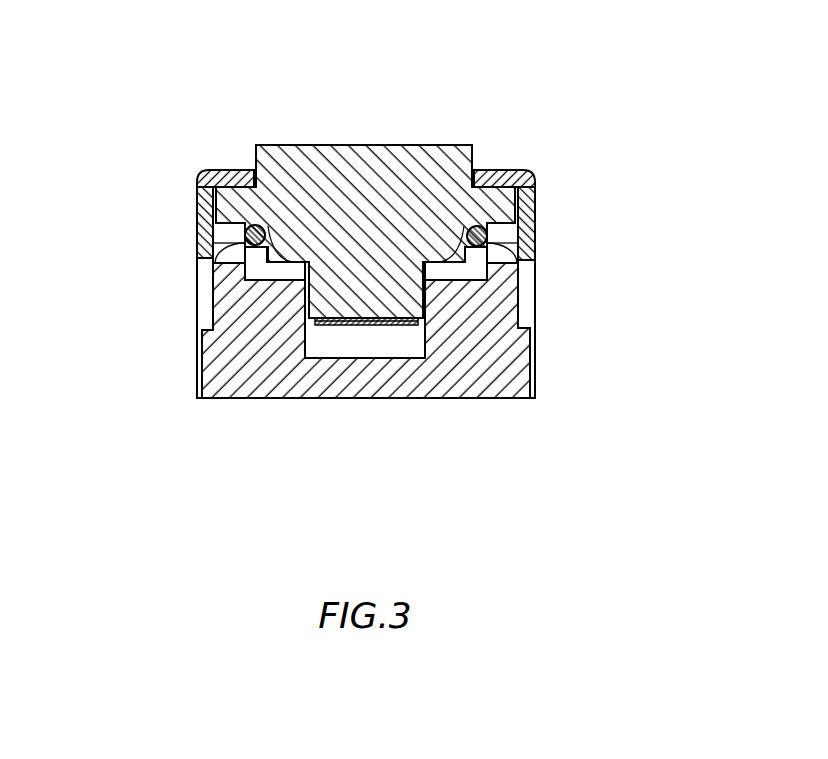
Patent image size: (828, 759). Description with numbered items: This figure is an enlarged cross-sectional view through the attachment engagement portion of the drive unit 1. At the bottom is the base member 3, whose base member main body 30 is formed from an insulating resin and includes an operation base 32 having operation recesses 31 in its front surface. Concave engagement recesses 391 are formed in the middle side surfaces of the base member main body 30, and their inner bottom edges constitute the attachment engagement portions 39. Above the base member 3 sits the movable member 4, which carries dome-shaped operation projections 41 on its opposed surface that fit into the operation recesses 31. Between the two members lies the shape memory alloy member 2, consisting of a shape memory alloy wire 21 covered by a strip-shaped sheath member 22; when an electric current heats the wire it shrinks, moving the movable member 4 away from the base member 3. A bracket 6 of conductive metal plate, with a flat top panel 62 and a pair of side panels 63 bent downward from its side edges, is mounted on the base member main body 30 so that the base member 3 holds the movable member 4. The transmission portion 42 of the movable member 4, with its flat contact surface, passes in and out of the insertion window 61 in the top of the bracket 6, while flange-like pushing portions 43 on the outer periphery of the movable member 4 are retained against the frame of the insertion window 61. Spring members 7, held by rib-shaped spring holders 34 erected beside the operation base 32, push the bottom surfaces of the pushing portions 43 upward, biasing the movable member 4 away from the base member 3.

The drive unit 1 is at (345, 143).
The shape memory alloy member 2 is at (378, 409).
The base member 3 is at (357, 383).
The movable member 4 is at (366, 246).
The bracket 6 is at (372, 163).
The spring member 7 is at (245, 233).
The shape memory alloy wire 21 is at (365, 325).
The sheath member 22 is at (400, 325).
The base member main body 30 is at (288, 400).
The operation recess 31 is at (343, 358).
The operation base 32 is at (310, 347).
The spring holder 34 is at (250, 290).
The attachment engagement portion 39 is at (194, 322).
The operation projection 41 is at (411, 320).
The transmission portion 42 is at (398, 145).
The pushing portion 43 is at (236, 158).
The insertion window 61 is at (473, 145).
The top panel 62 is at (500, 170).
The side panel 63 is at (198, 203).
The engagement recess 391 is at (212, 303).